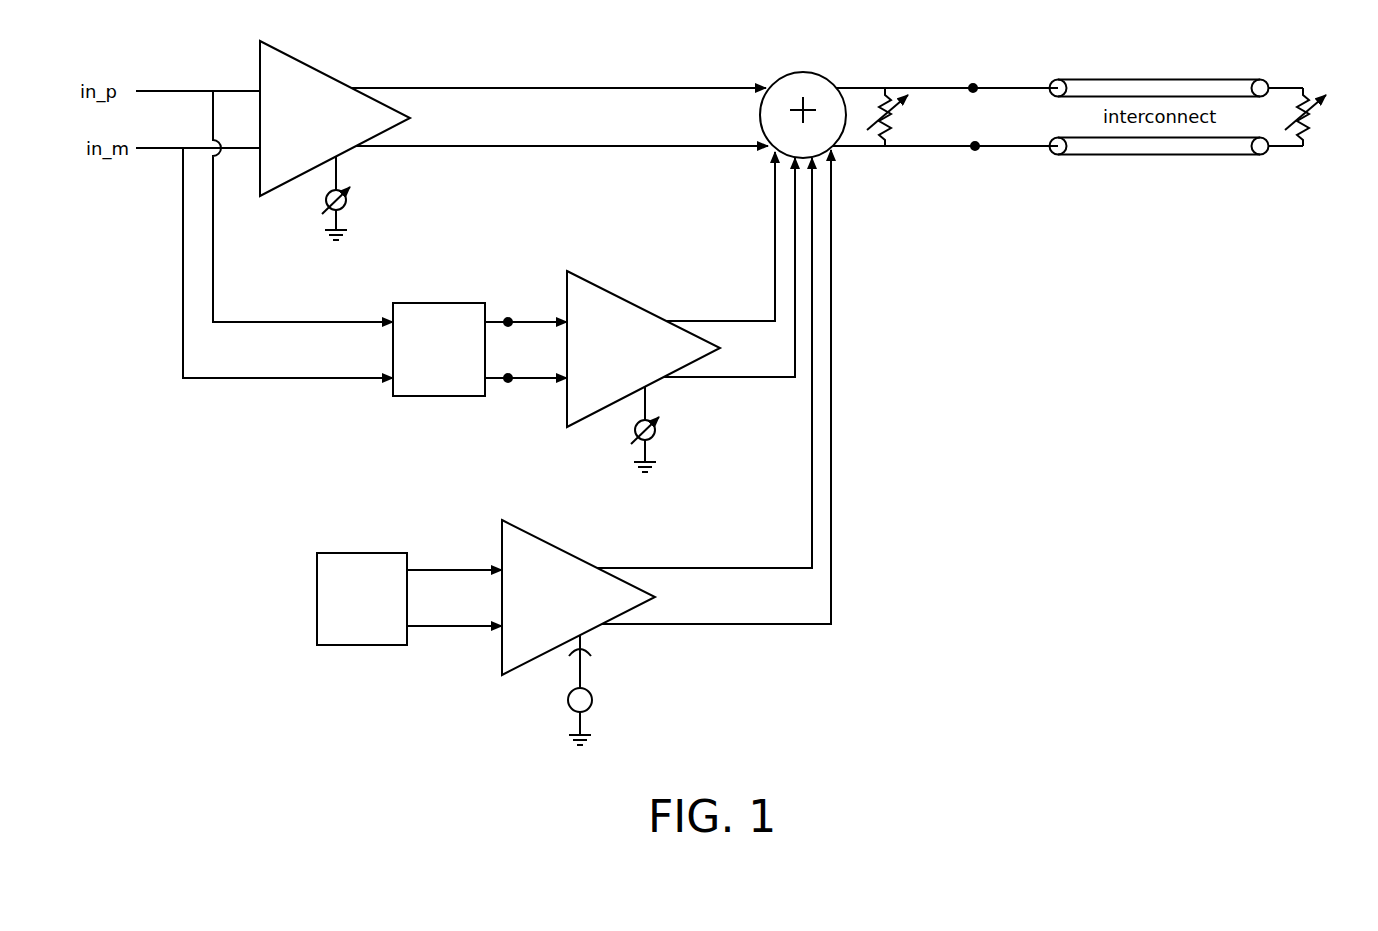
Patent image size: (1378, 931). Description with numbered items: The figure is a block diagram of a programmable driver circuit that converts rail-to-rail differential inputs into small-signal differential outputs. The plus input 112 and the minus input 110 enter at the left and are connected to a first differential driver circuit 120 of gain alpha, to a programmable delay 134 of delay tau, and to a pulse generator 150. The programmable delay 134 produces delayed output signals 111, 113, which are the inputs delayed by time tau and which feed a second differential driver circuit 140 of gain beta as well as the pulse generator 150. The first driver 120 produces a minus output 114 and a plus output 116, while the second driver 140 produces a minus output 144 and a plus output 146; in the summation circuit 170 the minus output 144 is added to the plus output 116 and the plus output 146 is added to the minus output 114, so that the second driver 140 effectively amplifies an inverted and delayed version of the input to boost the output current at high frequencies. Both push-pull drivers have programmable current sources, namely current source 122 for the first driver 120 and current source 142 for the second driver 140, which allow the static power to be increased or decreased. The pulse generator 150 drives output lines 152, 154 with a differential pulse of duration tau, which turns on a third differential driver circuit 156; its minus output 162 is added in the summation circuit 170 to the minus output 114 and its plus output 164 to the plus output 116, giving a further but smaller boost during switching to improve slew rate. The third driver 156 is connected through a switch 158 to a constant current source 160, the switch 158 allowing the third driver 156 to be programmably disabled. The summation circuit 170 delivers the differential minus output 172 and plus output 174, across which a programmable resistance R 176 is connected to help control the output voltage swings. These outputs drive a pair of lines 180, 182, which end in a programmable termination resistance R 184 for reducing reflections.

The in_m minus input 110 is at (152, 152).
The delayed output signal of programmable delay 111 is at (508, 383).
The in_p plus input 112 is at (150, 90).
The delayed output signal of programmable delay 113 is at (508, 318).
The minus output of first driver 114 is at (498, 88).
The plus output of first driver 116 is at (498, 150).
The first differential driver circuit 120 is at (328, 118).
The programmable current source 122 is at (348, 204).
The programmable delay 134 is at (440, 303).
The second differential driver circuit 140 is at (632, 349).
The programmable current source 142 is at (657, 434).
The minus output of second driver 144 is at (730, 381).
The plus output of second driver 146 is at (730, 320).
The pulse generator 150 is at (362, 552).
The pulse generator output line 152 is at (445, 630).
The pulse generator output line 154 is at (445, 568).
The third differential driver circuit 156 is at (581, 597).
The switch 158 is at (583, 660).
The constant current source 160 is at (592, 702).
The minus output of third driver 162 is at (712, 568).
The plus output of third driver 164 is at (712, 628).
The summation circuit 170 is at (814, 110).
The out_m minus output 172 is at (975, 84).
The out_p plus output 174 is at (975, 152).
The programmable resistance R 176 is at (915, 124).
The interconnect line 180 is at (1158, 78).
The interconnect line 182 is at (1158, 157).
The programmable termination resistance R 184 is at (1310, 130).